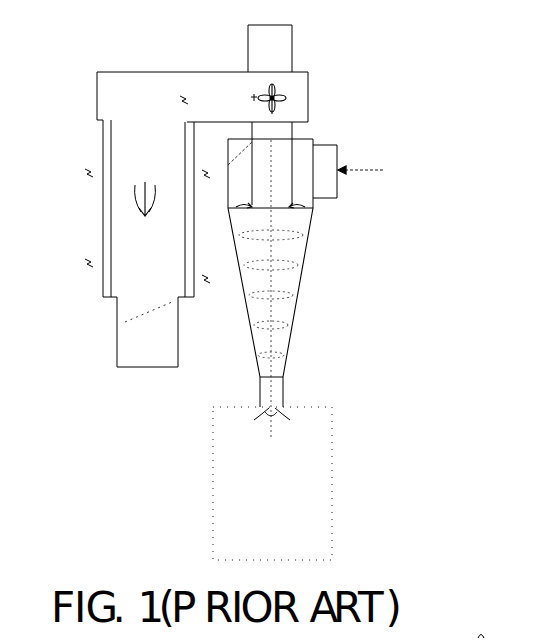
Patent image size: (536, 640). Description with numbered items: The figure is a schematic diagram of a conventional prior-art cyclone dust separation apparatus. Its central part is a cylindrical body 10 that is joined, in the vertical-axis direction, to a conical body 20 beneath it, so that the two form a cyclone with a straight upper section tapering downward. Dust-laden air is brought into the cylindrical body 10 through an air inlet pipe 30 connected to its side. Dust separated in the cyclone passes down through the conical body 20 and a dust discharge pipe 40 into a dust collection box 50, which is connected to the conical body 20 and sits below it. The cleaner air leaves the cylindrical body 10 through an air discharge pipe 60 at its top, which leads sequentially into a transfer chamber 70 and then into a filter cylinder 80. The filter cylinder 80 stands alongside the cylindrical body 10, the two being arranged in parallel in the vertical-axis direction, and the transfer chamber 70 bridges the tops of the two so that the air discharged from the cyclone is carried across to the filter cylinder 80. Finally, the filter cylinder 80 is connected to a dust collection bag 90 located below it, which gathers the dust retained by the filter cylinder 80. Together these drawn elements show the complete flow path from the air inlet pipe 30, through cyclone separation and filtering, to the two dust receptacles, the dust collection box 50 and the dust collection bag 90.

The cylindrical body 10 is at (229, 189).
The conical body 20 is at (236, 248).
The air inlet pipe 30 is at (326, 147).
The dust discharge pipe 40 is at (260, 392).
The dust collection box 50 is at (333, 436).
The air discharge pipe 60 is at (293, 133).
The transfer chamber 70 is at (203, 88).
The filter cylinder 80 is at (103, 157).
The dust collection bag 90 is at (128, 360).